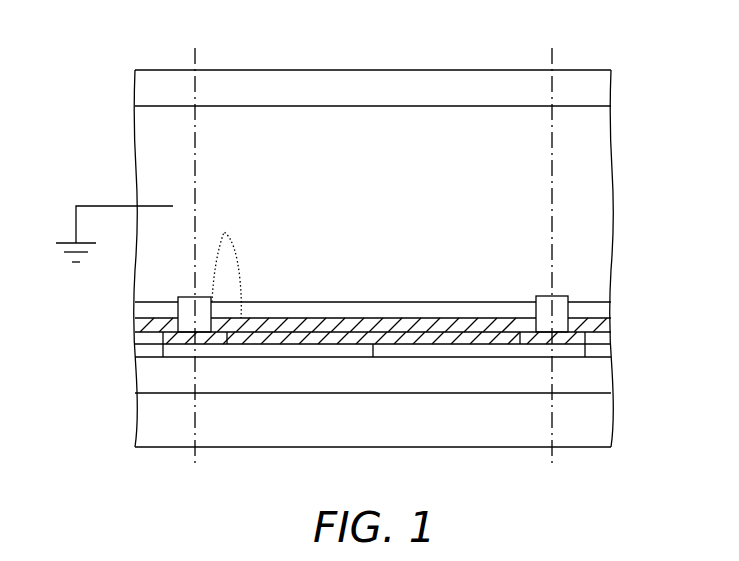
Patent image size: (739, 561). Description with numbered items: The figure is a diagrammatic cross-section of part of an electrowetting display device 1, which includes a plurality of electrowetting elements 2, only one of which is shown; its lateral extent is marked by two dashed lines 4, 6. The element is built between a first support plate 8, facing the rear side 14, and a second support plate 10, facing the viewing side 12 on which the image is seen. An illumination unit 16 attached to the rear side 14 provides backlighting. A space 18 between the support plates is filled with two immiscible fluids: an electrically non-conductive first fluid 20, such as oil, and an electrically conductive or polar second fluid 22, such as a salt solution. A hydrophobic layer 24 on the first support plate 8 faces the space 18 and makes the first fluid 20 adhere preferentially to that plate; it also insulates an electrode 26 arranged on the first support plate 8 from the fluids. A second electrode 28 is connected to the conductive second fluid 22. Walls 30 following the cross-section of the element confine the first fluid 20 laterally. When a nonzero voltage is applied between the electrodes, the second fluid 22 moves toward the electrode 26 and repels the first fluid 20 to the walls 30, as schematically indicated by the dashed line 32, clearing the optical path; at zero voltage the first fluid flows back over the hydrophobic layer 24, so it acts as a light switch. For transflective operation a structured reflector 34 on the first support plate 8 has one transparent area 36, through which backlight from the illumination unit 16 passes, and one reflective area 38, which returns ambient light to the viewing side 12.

The display device 1 is at (655, 56).
The electrowetting element 2 is at (385, 58).
The dashed line 4 is at (201, 47).
The dashed line 6 is at (558, 48).
The first support plate 8 is at (597, 379).
The second support plate 10 is at (594, 76).
The viewing side 12 is at (252, 70).
The rear side 14 is at (292, 395).
The illumination unit 16 is at (598, 417).
The space 18 is at (437, 121).
The first fluid 20 is at (512, 312).
The second fluid 22 is at (598, 203).
The hydrophobic layer 24 is at (433, 320).
The electrode 26 is at (248, 338).
The second electrode 28 is at (75, 220).
The walls 30 is at (188, 300).
The dashed line 32 is at (217, 246).
The structured reflector 34 is at (598, 350).
The transparent area 36 is at (438, 350).
The reflective area 38 is at (343, 350).